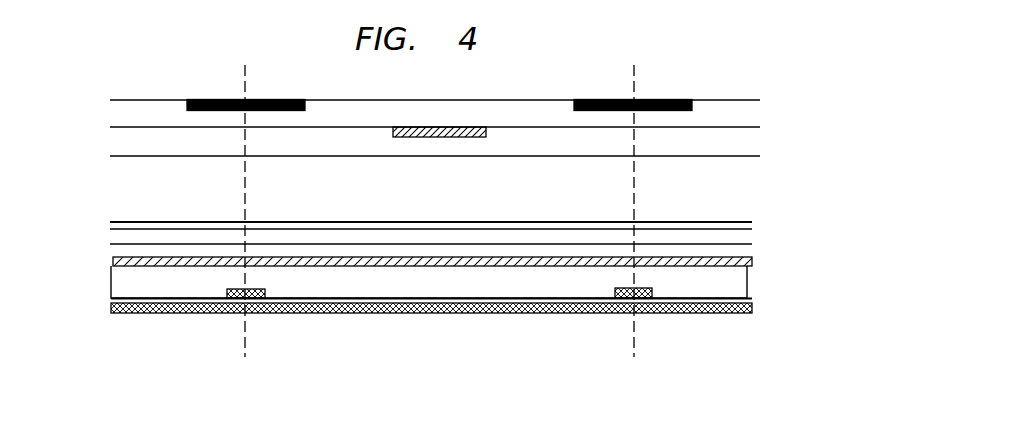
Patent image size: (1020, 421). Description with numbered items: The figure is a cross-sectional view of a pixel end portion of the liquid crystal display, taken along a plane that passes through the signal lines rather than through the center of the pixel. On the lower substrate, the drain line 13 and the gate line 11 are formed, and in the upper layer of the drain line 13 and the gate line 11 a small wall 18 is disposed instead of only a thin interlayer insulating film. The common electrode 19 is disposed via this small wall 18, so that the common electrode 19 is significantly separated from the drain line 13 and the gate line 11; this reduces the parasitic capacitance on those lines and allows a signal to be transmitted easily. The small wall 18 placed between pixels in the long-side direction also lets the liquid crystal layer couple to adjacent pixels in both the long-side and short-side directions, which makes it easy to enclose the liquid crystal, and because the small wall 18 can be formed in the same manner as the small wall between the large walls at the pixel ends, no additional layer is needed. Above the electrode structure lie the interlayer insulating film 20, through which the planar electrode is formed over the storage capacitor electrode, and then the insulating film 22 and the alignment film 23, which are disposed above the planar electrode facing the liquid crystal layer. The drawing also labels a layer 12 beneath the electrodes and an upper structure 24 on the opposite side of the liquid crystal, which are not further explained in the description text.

The gate line 11 is at (405, 315).
The electrode layer 12 is at (317, 300).
The drain line 13 is at (232, 298).
The small wall 18 is at (502, 282).
The common electrode 19 is at (143, 262).
The interlayer insulating film 20 is at (130, 251).
The insulating film 22 is at (130, 238).
The alignment film 23 is at (130, 222).
The backlight unit 24 is at (517, 173).